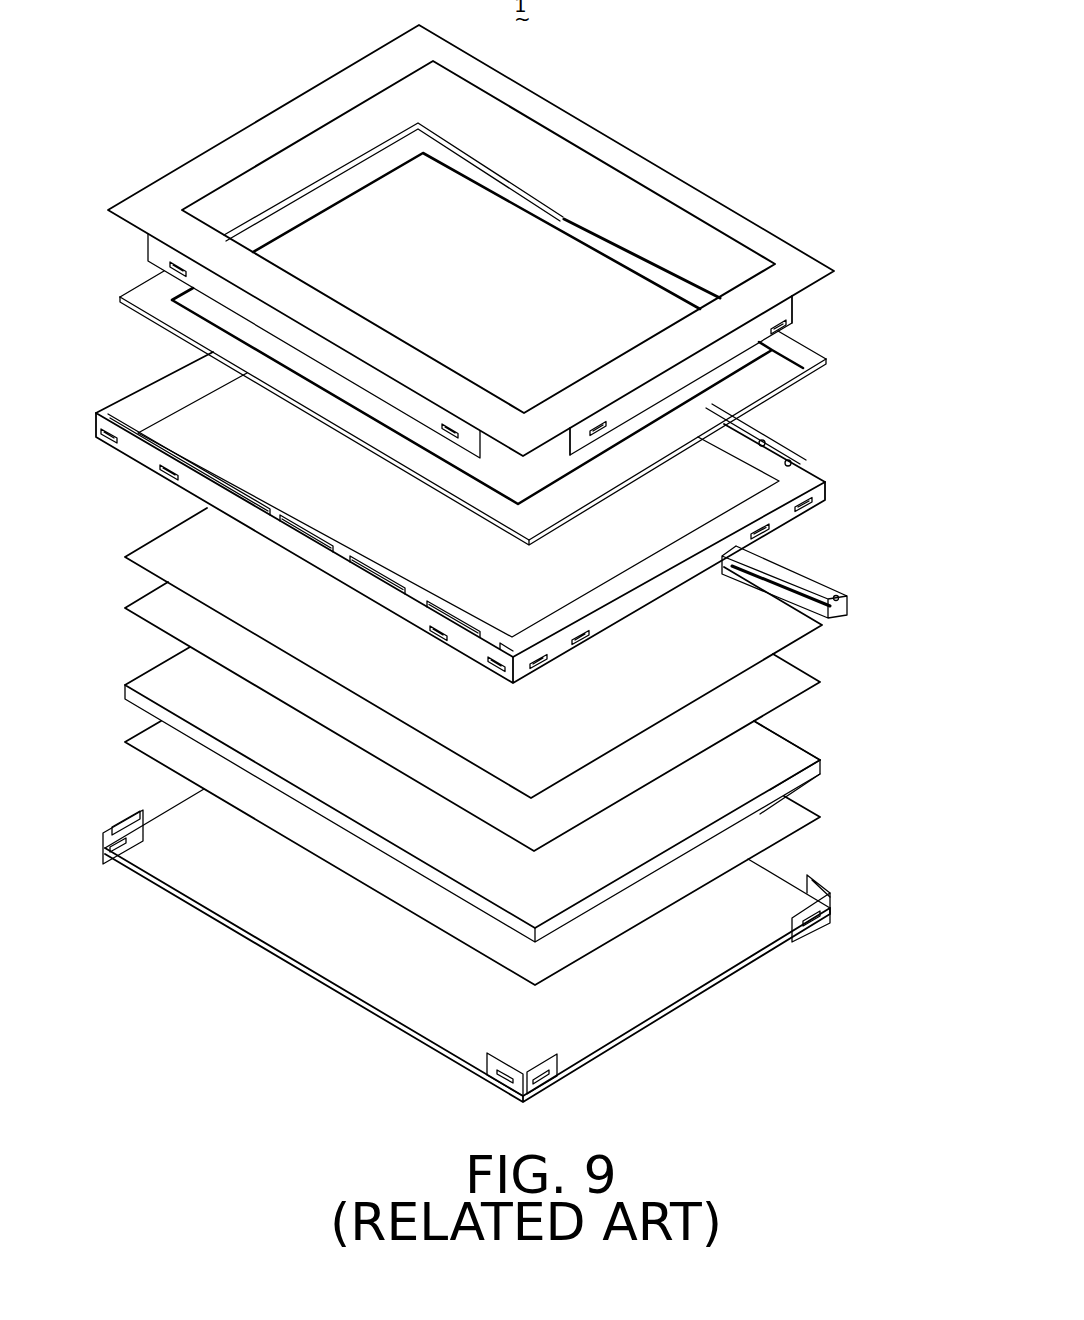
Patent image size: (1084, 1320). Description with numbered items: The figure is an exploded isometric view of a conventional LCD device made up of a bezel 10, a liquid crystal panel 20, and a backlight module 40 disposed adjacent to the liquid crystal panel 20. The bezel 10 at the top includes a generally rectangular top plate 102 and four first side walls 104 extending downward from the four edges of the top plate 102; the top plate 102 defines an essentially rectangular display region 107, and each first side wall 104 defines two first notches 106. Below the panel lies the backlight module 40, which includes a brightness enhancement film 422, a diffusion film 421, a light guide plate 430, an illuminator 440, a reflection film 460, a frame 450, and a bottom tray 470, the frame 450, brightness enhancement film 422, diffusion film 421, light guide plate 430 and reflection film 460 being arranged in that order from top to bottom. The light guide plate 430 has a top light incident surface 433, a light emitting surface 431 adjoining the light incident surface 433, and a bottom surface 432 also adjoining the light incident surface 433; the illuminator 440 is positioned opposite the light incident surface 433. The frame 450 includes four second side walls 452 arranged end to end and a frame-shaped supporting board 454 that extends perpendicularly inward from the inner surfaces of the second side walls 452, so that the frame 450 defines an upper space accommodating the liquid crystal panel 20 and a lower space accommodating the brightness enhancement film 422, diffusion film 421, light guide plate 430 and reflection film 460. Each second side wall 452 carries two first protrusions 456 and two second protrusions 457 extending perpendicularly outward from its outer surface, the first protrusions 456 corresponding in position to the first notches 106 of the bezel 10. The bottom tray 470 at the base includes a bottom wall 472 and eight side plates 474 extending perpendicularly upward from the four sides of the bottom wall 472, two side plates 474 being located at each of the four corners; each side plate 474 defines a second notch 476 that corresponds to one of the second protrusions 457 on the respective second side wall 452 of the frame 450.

The bezel 10 is at (745, 187).
The liquid crystal panel 20 is at (783, 368).
The backlight module 40 is at (878, 395).
The top plate 102 is at (497, 241).
The first side wall 104 is at (752, 335).
The first notch 106 is at (792, 331).
The display region 107 is at (548, 150).
The diffusion film 421 is at (770, 690).
The brightness enhancement film 422 is at (790, 635).
The light guide plate 430 is at (502, 794).
The light emitting surface 431 is at (790, 757).
The bottom surface 432 is at (762, 819).
The light incident surface 433 is at (797, 740).
The illuminator 440 is at (806, 578).
The frame 450 is at (480, 517).
The second side wall 452 is at (773, 522).
The supporting board 454 is at (775, 424).
The first protrusion 456 is at (162, 477).
The second protrusion 457 is at (817, 494).
The reflection film 460 is at (770, 840).
The bottom tray 470 is at (489, 970).
The bottom wall 472 is at (753, 915).
The side plate 474 is at (488, 1076).
The second notch 476 is at (503, 1087).